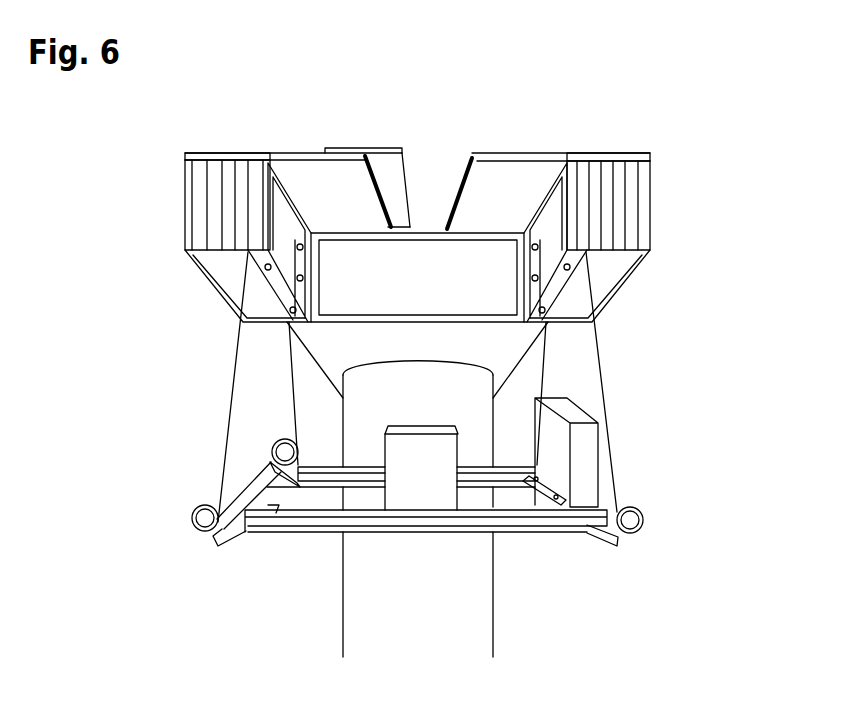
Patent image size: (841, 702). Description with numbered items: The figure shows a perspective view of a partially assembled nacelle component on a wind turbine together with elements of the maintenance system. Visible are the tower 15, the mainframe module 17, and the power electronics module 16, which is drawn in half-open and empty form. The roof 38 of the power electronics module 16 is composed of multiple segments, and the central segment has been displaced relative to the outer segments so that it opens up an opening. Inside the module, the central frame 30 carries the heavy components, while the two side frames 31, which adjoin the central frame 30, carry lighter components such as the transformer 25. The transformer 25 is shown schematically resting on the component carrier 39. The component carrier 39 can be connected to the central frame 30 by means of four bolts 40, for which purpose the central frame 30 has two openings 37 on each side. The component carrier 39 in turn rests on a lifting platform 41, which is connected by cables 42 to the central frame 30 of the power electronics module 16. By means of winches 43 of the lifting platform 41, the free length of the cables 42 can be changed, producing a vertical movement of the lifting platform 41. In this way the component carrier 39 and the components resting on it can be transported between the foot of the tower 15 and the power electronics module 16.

The tower 15 is at (494, 627).
The power electronics module 16 is at (651, 192).
The mainframe module 17 is at (430, 305).
The transformer 25 is at (604, 470).
The central frame 30 is at (575, 170).
The side frames 31 is at (200, 270).
The openings 37 is at (288, 324).
The roof 38 is at (295, 158).
The component carrier 39 is at (268, 508).
The bolts 40 is at (268, 475).
The lifting platform 41 is at (304, 532).
The cables 42 is at (234, 372).
The winches 43 is at (271, 452).